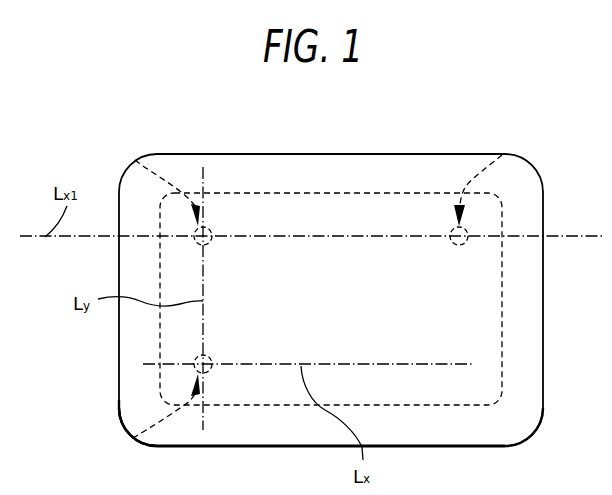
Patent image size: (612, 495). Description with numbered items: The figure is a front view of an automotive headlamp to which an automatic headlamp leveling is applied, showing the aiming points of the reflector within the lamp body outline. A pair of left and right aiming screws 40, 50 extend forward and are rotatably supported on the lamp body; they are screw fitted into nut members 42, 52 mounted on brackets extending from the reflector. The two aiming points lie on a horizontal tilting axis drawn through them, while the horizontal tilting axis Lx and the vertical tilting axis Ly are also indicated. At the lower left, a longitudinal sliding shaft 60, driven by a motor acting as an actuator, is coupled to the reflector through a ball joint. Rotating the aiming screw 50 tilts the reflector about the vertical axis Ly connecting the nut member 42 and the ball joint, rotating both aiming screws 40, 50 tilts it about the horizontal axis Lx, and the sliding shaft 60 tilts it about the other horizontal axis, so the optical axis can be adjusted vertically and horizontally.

The aiming screw 40 is at (157, 279).
The nut member 42 is at (203, 300).
The aiming screw 50 is at (497, 175).
The nut member 52 is at (459, 236).
The longitudinal sliding shaft 60 is at (131, 437).